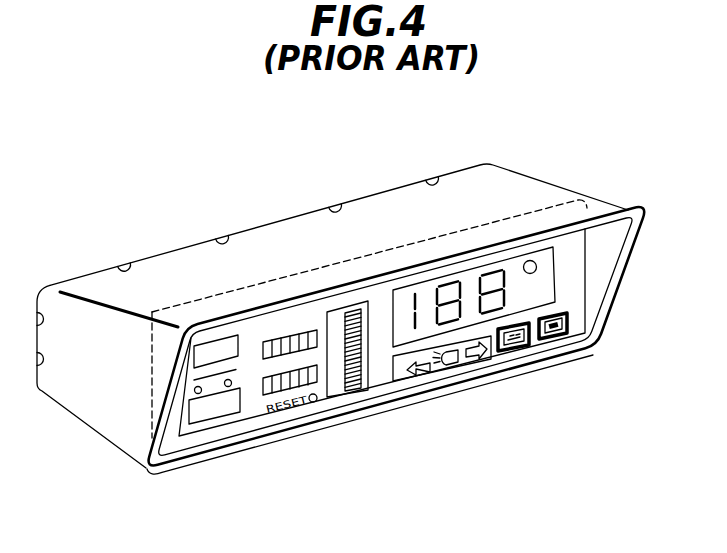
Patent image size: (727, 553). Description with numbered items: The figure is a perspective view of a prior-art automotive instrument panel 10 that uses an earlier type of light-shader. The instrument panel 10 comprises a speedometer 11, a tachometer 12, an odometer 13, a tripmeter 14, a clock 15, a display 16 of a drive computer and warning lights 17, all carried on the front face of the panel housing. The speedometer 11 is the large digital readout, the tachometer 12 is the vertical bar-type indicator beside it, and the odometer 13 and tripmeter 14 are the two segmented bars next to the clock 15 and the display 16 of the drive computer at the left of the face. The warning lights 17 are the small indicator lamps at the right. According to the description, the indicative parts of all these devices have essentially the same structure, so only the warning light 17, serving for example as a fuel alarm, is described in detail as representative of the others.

The instrument panel 10 is at (262, 214).
The speedometer 11 is at (548, 256).
The tachometer 12 is at (355, 388).
The odometer 13 is at (280, 343).
The tripmeter 14 is at (263, 388).
The clock 15 is at (210, 345).
The display of a drive computer 16 is at (213, 418).
The warning lights 17 is at (553, 337).